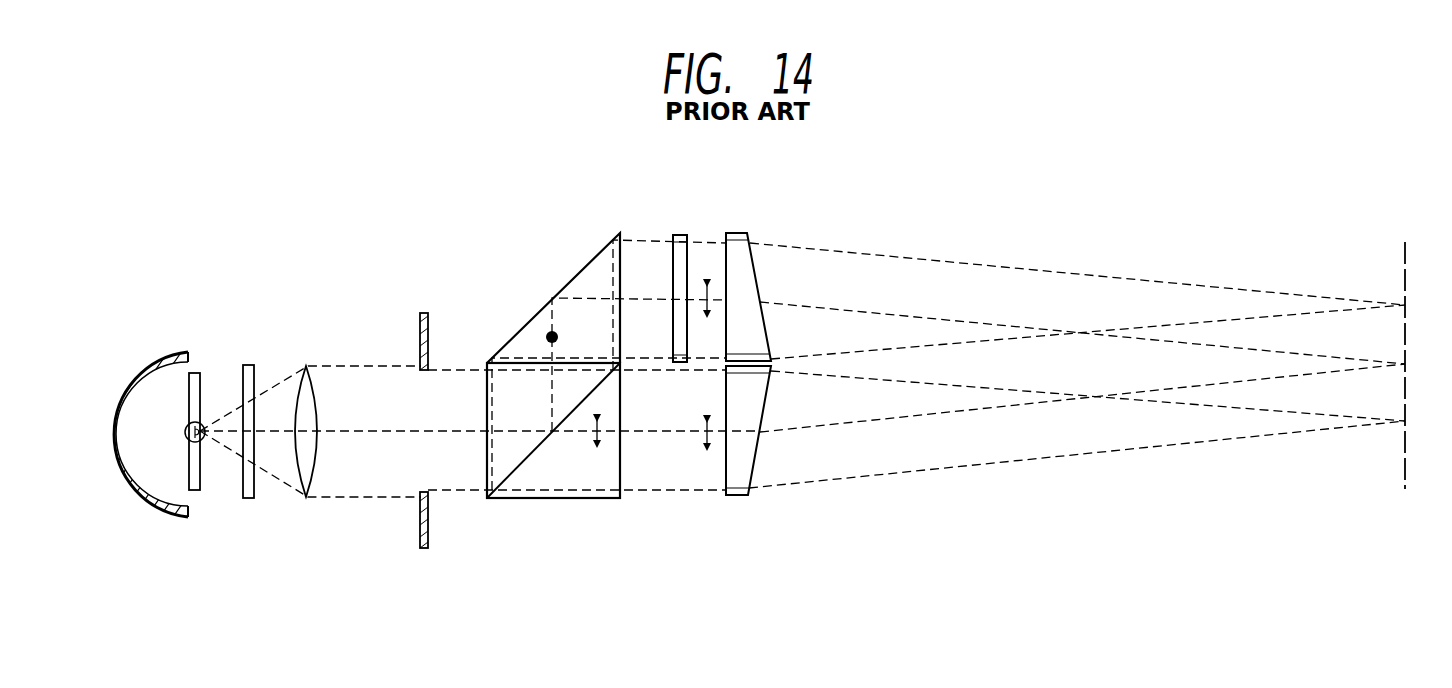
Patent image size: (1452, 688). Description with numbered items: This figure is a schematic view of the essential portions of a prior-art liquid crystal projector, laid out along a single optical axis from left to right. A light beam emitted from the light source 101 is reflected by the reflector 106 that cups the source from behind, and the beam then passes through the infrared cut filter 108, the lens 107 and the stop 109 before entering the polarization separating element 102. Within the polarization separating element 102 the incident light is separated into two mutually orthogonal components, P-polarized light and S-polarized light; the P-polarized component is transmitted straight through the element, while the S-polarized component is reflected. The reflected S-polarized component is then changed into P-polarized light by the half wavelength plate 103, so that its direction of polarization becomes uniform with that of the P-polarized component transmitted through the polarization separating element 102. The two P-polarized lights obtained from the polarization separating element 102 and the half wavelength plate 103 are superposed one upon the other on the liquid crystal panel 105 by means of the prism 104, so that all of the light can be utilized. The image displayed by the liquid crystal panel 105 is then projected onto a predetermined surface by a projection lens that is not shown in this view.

The light source 101 is at (198, 370).
The polarization separating element 102 is at (520, 467).
The half wavelength plate 103 is at (678, 245).
The prism 104 is at (740, 480).
The liquid crystal panel 105 is at (1406, 245).
The reflector 106 is at (142, 502).
The lens 107 is at (305, 488).
The infrared cut filter 108 is at (247, 497).
The stop 109 is at (423, 312).